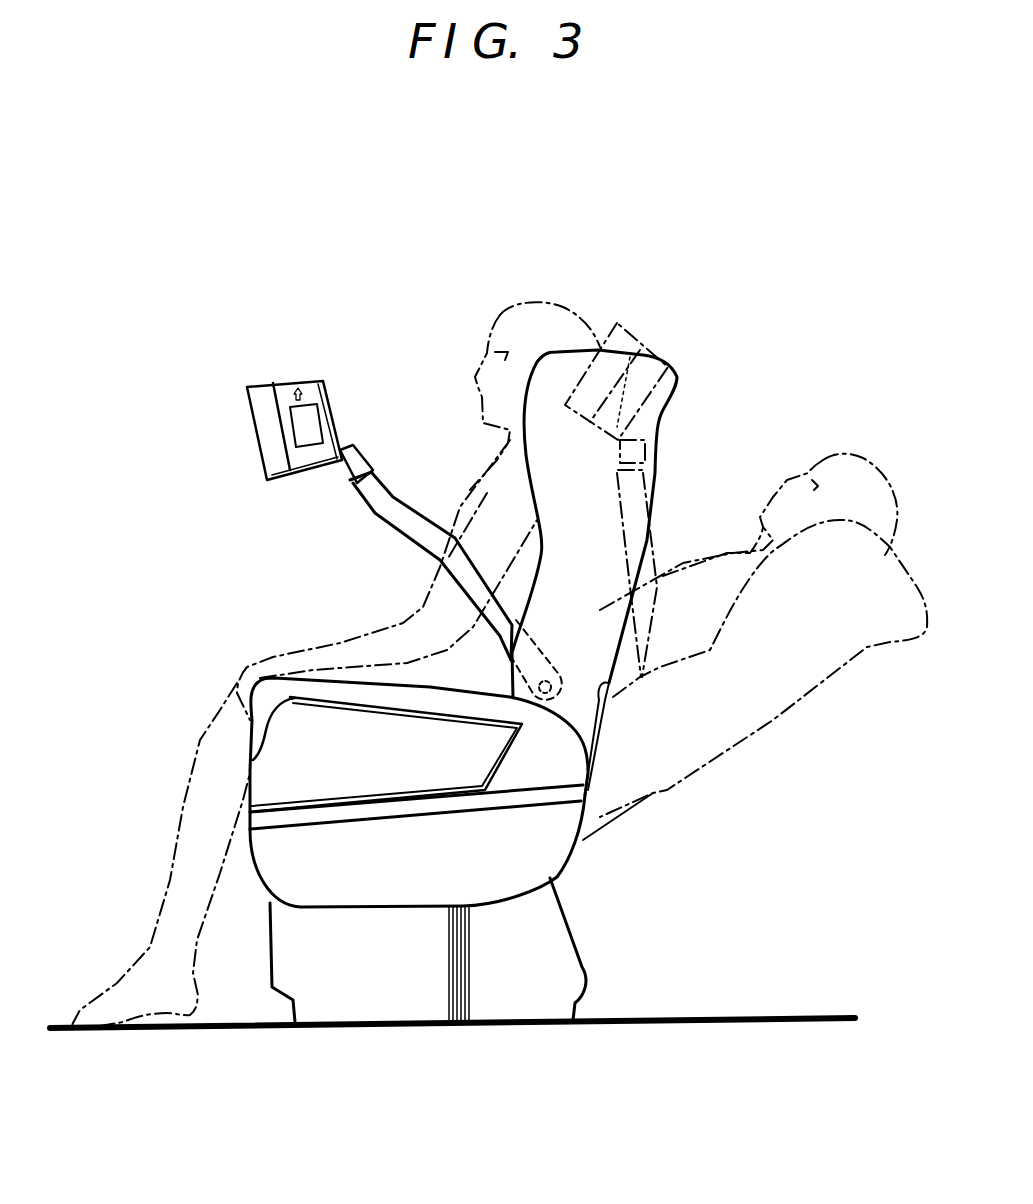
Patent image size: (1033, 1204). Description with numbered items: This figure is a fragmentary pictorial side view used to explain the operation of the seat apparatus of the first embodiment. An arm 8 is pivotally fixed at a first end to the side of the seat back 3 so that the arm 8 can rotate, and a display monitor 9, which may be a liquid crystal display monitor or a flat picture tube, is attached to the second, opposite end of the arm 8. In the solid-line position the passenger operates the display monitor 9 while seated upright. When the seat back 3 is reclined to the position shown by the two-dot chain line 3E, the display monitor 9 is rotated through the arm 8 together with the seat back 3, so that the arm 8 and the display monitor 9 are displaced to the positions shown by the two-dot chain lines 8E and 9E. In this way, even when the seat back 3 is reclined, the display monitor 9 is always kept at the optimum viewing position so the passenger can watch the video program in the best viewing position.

The seat back 3 is at (557, 350).
The display monitor 9 is at (263, 383).
The arm 8 is at (383, 527).
The two-dot chain line showing displaced display monitor 9E is at (617, 325).
The two-dot chain line showing displaced arm 8E is at (643, 507).
The two-dot chain line showing reclined seat back 3E is at (777, 727).